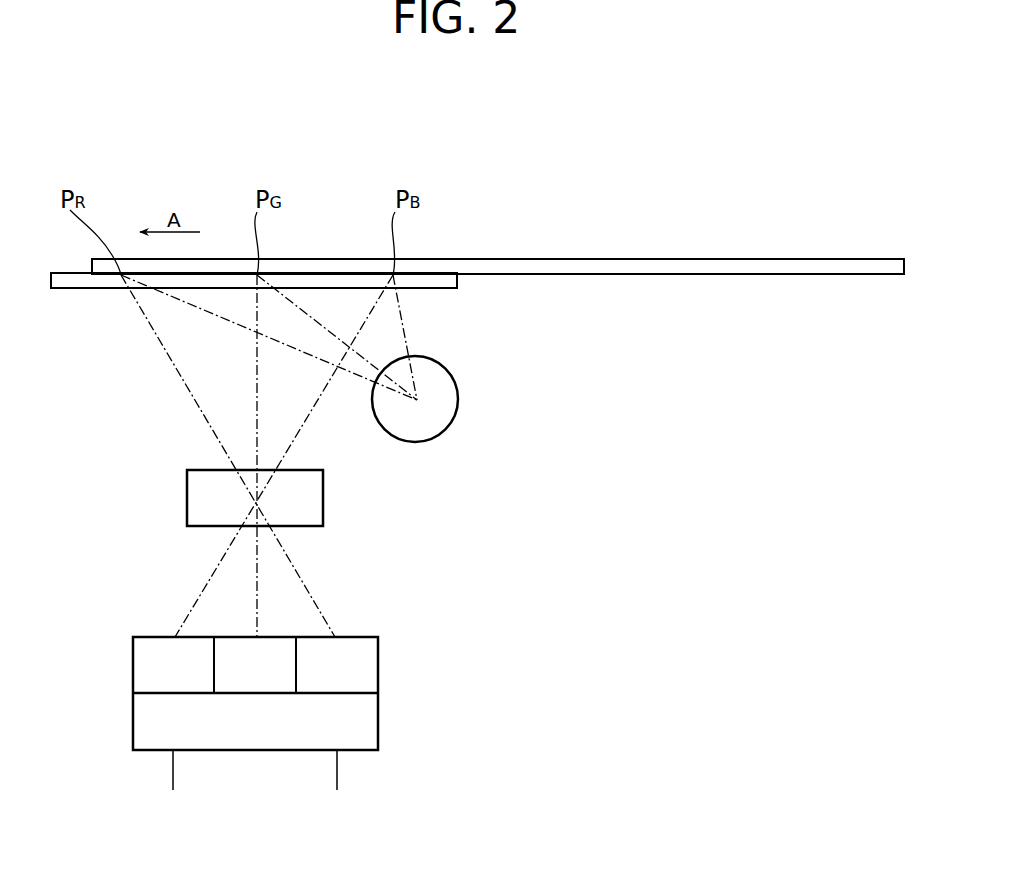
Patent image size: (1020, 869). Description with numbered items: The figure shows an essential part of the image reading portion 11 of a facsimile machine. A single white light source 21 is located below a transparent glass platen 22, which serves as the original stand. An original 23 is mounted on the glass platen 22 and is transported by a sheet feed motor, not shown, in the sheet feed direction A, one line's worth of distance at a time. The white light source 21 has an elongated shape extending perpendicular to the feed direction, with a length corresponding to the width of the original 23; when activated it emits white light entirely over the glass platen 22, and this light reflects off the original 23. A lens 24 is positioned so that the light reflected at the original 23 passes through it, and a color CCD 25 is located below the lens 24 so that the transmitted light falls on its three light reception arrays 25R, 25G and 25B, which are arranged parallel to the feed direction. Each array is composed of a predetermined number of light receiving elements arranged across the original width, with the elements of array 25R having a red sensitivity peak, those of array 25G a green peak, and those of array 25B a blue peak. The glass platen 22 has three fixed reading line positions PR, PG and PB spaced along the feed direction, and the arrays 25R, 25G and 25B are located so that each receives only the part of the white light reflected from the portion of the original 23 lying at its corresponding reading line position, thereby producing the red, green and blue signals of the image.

The image reading portion 11 is at (530, 504).
The white light source 21 is at (459, 399).
The glass platen 22 is at (92, 289).
The original 23 is at (492, 259).
The lens 24 is at (325, 494).
The color CCD 25 is at (279, 679).
The light reception array 25B is at (145, 658).
The light reception array 25G is at (277, 654).
The light reception array 25R is at (363, 670).